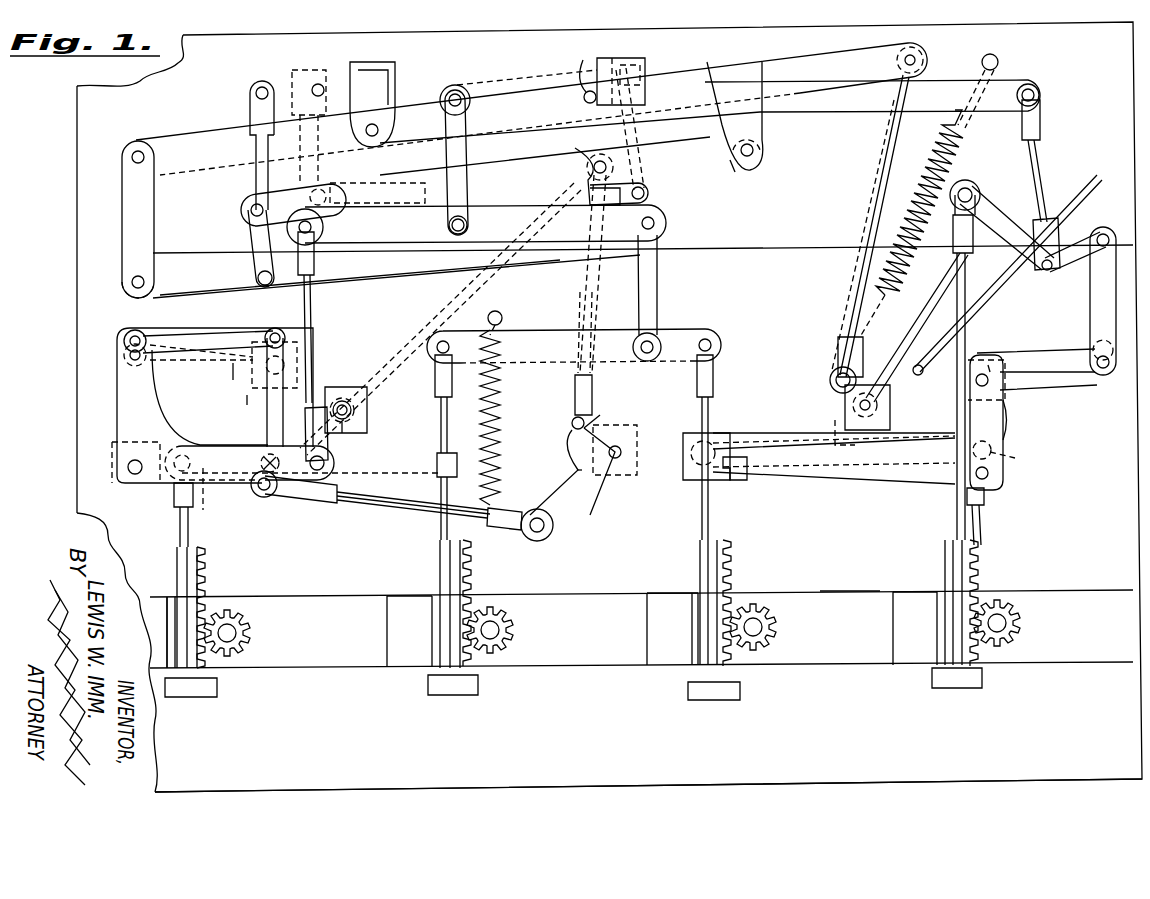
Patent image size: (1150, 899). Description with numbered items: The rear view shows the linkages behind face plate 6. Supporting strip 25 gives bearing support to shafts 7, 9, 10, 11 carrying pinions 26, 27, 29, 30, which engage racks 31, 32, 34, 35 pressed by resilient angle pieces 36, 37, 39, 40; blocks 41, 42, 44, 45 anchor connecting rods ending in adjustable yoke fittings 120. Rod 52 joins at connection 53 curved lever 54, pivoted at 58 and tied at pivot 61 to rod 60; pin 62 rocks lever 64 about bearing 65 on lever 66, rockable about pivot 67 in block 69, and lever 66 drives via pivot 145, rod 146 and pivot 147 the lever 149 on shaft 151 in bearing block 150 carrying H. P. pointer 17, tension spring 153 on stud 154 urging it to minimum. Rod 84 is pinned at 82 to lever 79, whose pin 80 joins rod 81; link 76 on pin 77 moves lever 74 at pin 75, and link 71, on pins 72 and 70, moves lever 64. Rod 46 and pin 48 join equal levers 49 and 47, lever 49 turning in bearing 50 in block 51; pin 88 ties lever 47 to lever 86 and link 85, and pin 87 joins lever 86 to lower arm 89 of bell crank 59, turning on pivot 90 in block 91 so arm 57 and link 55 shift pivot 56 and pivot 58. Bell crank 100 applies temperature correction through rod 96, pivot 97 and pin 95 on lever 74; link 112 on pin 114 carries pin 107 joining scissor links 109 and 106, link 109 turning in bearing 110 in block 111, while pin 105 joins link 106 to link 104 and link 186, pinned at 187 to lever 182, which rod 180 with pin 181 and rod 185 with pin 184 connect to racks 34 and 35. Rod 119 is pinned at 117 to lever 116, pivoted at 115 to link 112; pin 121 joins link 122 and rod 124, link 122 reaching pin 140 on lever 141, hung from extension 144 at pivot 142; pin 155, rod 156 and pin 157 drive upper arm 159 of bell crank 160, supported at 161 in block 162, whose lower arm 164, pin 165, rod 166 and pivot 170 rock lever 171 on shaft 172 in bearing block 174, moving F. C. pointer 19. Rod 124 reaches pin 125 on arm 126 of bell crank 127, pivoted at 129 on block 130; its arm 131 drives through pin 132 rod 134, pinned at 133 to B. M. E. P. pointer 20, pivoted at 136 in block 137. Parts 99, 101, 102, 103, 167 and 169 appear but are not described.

The face plate 6 is at (798, 745).
The shaft 7 is at (1005, 632).
The shaft 9 is at (753, 636).
The shaft 10 is at (492, 638).
The shaft 11 is at (233, 640).
The H. P. pointer 17 is at (912, 348).
The F. C. pointer 19 is at (420, 335).
The B. M. E. P. pointer 20 is at (634, 130).
The horizontal supporting strip 25 is at (848, 591).
The pinion 26 is at (1020, 615).
The pinion 27 is at (776, 632).
The pinion 29 is at (514, 630).
The pinion 30 is at (245, 625).
The rack 31 is at (980, 552).
The rack 32 is at (735, 560).
The rack 34 is at (474, 572).
The rack 35 is at (208, 560).
The resilient angle piece 36 is at (928, 600).
The resilient angle piece 37 is at (690, 600).
The resilient angle piece 39 is at (430, 600).
The resilient angle piece 40 is at (170, 598).
The block 41 is at (935, 682).
The block 42 is at (690, 692).
The block 44 is at (430, 687).
The block 45 is at (185, 692).
The second connecting rod 46 is at (982, 531).
The horizontal lever 47 is at (810, 448).
The pin 48 is at (1016, 458).
The horizontal lever 49 is at (845, 430).
The bearing 50 is at (740, 480).
The fixed supporting block 51 is at (718, 445).
The connecting rod 52 is at (957, 407).
The pivotal connection 53 is at (980, 193).
The lever 54 is at (1090, 292).
The vertical link 55 is at (1090, 322).
The pivot 56 is at (1105, 375).
The arm 57 is at (1050, 377).
The pivot 58 is at (1108, 234).
The bell crank 59 is at (1010, 426).
The rod 60 is at (1044, 165).
The pivot 61 is at (1040, 270).
The pin 62 is at (1040, 95).
The lever 64 is at (986, 104).
The pivotal connection 65 is at (585, 92).
The lever 66 is at (798, 55).
The fixed pivot 67 is at (380, 130).
The block 69 is at (395, 78).
The pin 70 is at (462, 95).
The link 71 is at (447, 160).
The pin 72 is at (467, 226).
The horizontal lever 74 is at (570, 240).
The pin 75 is at (655, 223).
The vertical link 76 is at (662, 265).
The pin 77 is at (640, 345).
The horizontal lever 79 is at (563, 352).
The pin 80 is at (437, 350).
The connecting rod 81 is at (441, 407).
The pin 82 is at (713, 345).
The connecting rod 84 is at (712, 398).
The link 85 is at (714, 372).
The horizontal lever 86 is at (882, 488).
The pin 87 is at (990, 476).
The pin 88 is at (690, 485).
The lower arm 89 is at (1004, 450).
The fixed pivot 90 is at (1005, 376).
The supporting block 91 is at (990, 365).
The pin 95 is at (313, 229).
The connecting rod 96 is at (315, 325).
The pivot 97 is at (356, 508).
The pivot 99 is at (260, 498).
The bell crank 100 is at (178, 438).
The plate 101 is at (118, 391).
The pivot 102 is at (128, 356).
The pivot 103 is at (134, 458).
The scissor link 104 is at (160, 352).
The pin 105 is at (284, 332).
The scissor link 106 is at (215, 335).
The pin 107 is at (128, 342).
The scissor link 109 is at (232, 381).
The bearing 110 is at (288, 352).
The fixed pivot block 111 is at (258, 396).
The vertical link 112 is at (122, 213).
The pin 114 is at (132, 157).
The pivot 115 is at (132, 282).
The horizontal lever 116 is at (770, 284).
The pin 117 is at (922, 318).
The connecting rod 119 is at (980, 374).
The yoke fitting 120 is at (1040, 122).
The pin 121 is at (258, 278).
The vertical link 122 is at (254, 242).
The connecting rod 124 is at (256, 185).
The pin 125 is at (252, 93).
The horizontal arm 126 is at (275, 78).
The bell crank 127 is at (324, 88).
The pivot 129 is at (393, 62).
The fixed block 130 is at (308, 70).
The lower arm 131 is at (300, 182).
The pin 132 is at (345, 180).
The pin 133 is at (645, 193).
The horizontal connecting rod 134 is at (560, 160).
The pivot 136 is at (614, 60).
The block 137 is at (645, 62).
The pin 140 is at (250, 210).
The lever 141 is at (728, 160).
The pivot 142 is at (755, 150).
The extension 144 is at (722, 66).
The pivot 145 is at (916, 60).
The rod 146 is at (880, 178).
The pivot 147 is at (838, 372).
The lever 149 is at (845, 395).
The bearing block 150 is at (885, 395).
The shaft 151 is at (878, 412).
The tension spring 153 is at (945, 150).
The stud 154 is at (998, 62).
The pin 155 is at (600, 160).
The connecting rod 156 is at (580, 318).
The pin 157 is at (572, 418).
The upper arm 159 is at (585, 414).
The bell crank 160 is at (574, 456).
The pivot 161 is at (622, 452).
The fixed block 162 is at (630, 428).
The lower bell crank arm 164 is at (590, 490).
The pin 165 is at (545, 535).
The connecting rod 166 is at (406, 515).
The spring 167 is at (502, 382).
The pivot 169 is at (488, 318).
The pivot 170 is at (300, 504).
The lever 171 is at (345, 420).
The shaft 172 is at (358, 400).
The bearing block 174 is at (330, 388).
The second connecting rod 180 is at (492, 530).
The pin 181 is at (452, 455).
The horizontal lever 182 is at (378, 478).
The pin 184 is at (204, 498).
The connecting rod 185 is at (180, 528).
The vertical link 186 is at (268, 431).
The pivot pin 187 is at (262, 463).